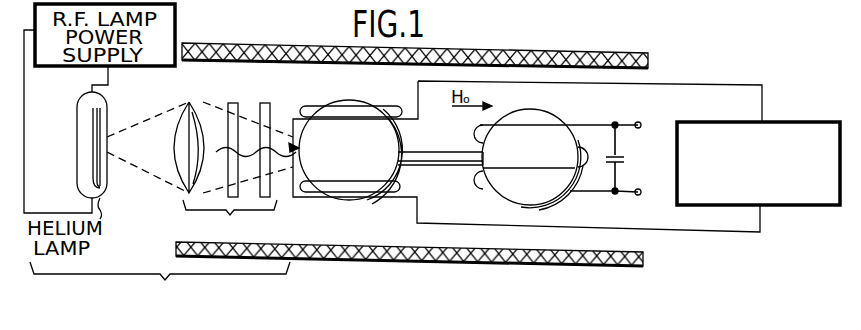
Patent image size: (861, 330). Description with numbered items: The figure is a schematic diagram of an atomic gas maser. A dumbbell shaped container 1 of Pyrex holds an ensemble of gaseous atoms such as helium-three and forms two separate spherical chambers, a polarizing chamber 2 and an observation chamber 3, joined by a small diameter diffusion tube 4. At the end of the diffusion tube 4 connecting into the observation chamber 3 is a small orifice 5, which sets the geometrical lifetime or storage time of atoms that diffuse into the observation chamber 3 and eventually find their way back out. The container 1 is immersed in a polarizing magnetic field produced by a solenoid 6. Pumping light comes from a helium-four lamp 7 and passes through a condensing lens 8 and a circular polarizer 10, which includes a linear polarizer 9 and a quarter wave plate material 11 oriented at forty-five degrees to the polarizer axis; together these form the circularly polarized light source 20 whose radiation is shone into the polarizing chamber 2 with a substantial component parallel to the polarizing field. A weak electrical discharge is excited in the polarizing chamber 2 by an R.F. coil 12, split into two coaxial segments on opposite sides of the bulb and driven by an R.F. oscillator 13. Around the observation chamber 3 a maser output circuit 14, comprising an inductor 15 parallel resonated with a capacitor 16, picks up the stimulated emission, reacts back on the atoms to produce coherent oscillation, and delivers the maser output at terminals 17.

The dumbbell shaped container 1 is at (456, 178).
The polarizing chamber 2 is at (356, 150).
The observation chamber 3 is at (540, 161).
The diffusion tube 4 is at (424, 152).
The orifice 5 is at (483, 158).
The solenoid 6 is at (650, 61).
The He4 lamp 7 is at (105, 100).
The condensing lens 8 is at (191, 103).
The linear polarizer 9 is at (233, 103).
The circular polarizer 10 is at (267, 221).
The quarter wave plate material 11 is at (265, 103).
The R.F. coil 12 is at (300, 106).
The R.F. oscillator 13 is at (815, 206).
The maser output circuit 14 is at (609, 113).
The inductor 15 is at (555, 117).
The capacitor 16 is at (634, 149).
The terminals 17 is at (651, 117).
The circularly polarized resonance radiation source 20 is at (154, 294).